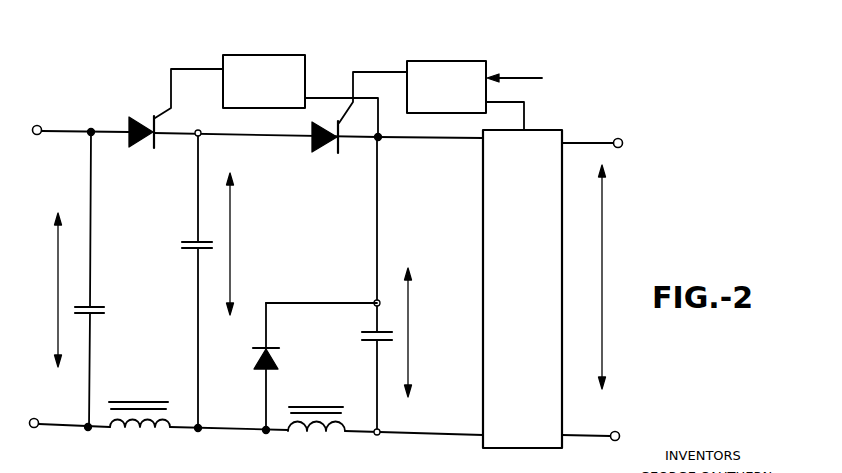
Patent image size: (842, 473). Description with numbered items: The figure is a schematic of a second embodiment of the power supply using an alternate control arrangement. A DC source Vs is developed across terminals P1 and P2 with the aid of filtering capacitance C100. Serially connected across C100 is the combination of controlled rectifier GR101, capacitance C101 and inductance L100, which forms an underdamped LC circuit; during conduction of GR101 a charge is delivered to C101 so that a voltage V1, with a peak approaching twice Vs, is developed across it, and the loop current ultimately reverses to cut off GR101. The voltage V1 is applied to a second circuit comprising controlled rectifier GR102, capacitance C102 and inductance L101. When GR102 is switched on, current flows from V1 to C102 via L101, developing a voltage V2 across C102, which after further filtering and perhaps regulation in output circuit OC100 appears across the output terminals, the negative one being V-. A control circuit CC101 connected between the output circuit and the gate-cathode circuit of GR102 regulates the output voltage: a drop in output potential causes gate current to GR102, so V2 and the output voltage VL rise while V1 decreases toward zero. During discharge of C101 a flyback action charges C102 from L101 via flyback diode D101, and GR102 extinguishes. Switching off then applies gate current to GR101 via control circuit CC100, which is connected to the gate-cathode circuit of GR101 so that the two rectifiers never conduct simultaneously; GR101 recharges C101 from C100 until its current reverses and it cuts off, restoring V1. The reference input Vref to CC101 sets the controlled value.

The terminal P1 is at (27, 119).
The terminal P2 is at (26, 434).
The controlled rectifier GR101 is at (167, 108).
The controlled rectifier GR102 is at (351, 125).
The control circuit CC100 is at (300, 96).
The control circuit CC101 is at (465, 95).
The output circuit OC100 is at (522, 289).
The filtering capacitance C100 is at (104, 324).
The capacitance C101 is at (184, 230).
The capacitance C102 is at (362, 347).
The inductance L100 is at (139, 431).
The inductance L101 is at (316, 435).
The flyback diode D101 is at (315, 366).
The reference voltage input Vref is at (531, 79).
The DC source Vs is at (52, 290).
The voltage V1 is at (230, 244).
The voltage V2 is at (408, 332).
The output voltage VL is at (600, 277).
The output terminal V- is at (602, 430).